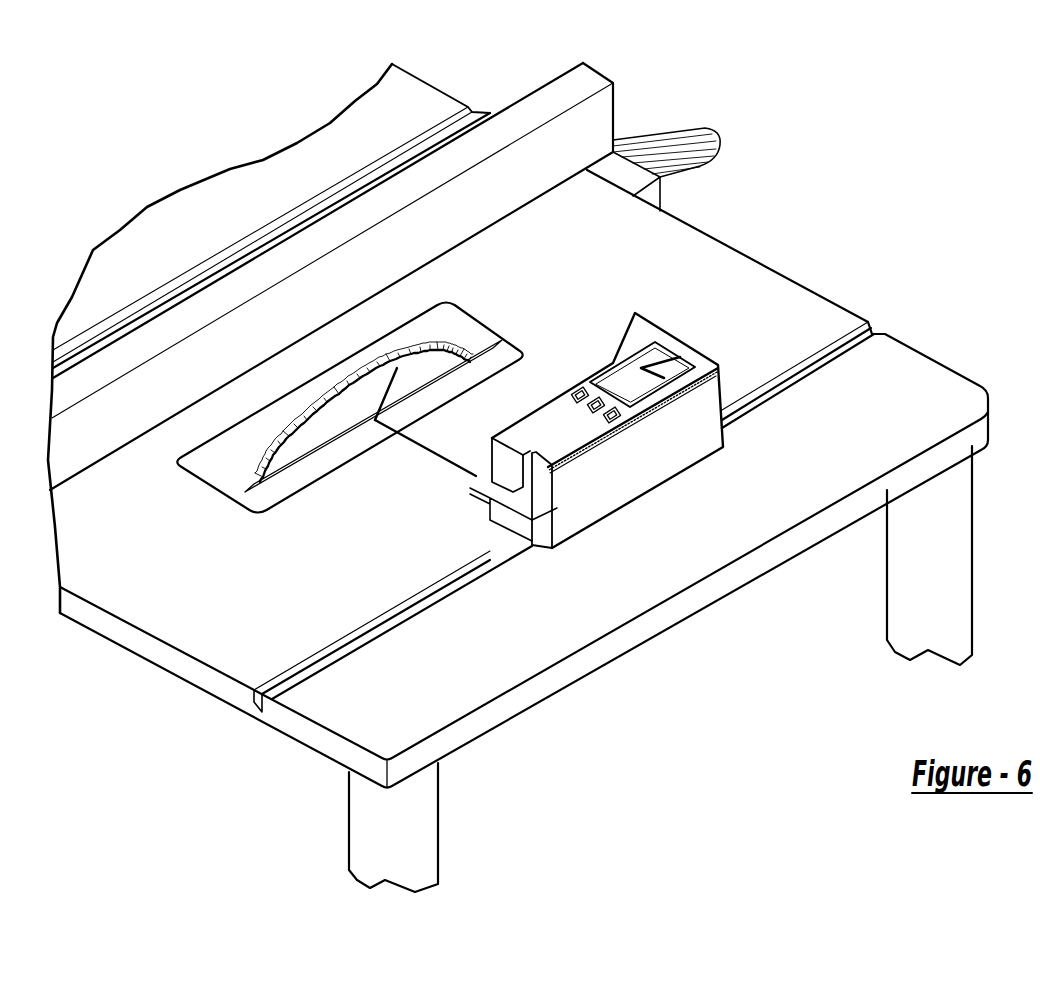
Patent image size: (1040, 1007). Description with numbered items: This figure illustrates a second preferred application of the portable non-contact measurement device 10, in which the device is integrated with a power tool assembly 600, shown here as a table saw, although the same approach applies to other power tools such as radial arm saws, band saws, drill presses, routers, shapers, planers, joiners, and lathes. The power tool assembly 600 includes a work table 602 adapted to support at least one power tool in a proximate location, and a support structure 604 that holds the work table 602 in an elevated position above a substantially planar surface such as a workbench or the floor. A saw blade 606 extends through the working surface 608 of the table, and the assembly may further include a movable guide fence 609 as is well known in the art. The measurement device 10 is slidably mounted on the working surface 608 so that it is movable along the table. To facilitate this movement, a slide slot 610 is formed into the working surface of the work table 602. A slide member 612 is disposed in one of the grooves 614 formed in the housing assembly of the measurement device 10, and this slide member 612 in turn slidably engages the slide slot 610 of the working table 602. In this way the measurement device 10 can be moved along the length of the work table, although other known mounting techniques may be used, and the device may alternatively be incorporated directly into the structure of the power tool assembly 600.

The portable measurement device 10 is at (663, 333).
The power tool assembly 600 is at (882, 215).
The work table 602 is at (923, 357).
The support structure 604 is at (936, 577).
The saw blade 606 is at (327, 437).
The working surface 608 is at (652, 254).
The movable guide fence 609 is at (598, 73).
The slide slot 610 is at (262, 705).
The slide member 612 is at (503, 553).
The grooves 614 is at (490, 490).